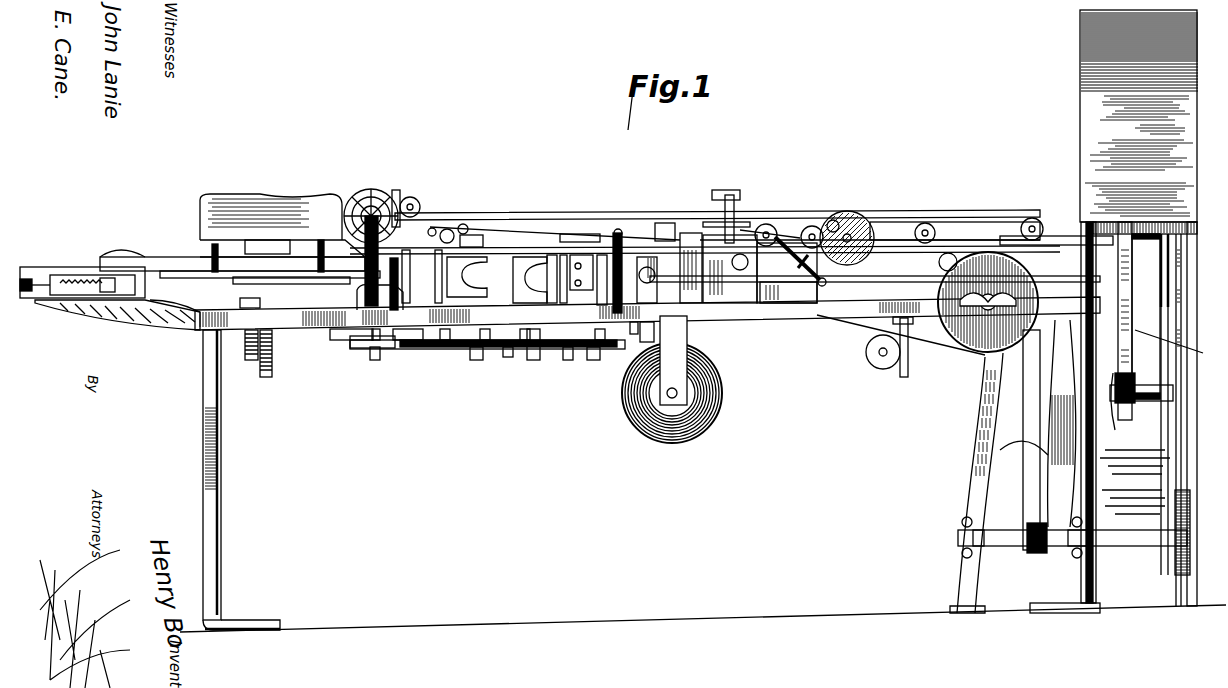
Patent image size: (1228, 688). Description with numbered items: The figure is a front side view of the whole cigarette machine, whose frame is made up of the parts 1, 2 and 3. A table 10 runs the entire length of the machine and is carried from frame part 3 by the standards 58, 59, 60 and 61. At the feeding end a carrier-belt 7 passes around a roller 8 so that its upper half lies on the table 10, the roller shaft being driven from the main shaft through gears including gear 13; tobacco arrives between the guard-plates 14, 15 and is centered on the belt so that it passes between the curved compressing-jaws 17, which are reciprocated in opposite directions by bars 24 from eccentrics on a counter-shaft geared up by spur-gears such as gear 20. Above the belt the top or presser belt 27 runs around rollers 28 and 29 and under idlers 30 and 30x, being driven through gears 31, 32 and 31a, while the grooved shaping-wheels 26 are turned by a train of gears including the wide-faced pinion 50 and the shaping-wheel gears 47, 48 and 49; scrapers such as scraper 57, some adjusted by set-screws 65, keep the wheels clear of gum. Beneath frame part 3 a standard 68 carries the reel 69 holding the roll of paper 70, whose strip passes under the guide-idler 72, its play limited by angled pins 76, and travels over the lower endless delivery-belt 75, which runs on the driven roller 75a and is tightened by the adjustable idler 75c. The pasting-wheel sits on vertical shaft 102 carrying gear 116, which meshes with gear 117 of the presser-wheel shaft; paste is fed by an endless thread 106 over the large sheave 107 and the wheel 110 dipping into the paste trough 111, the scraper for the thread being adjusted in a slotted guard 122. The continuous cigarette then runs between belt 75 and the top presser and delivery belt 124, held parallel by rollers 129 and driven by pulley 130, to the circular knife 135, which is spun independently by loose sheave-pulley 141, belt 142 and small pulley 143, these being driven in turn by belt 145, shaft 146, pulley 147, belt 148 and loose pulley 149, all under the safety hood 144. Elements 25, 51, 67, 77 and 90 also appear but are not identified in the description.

The frame 1 is at (222, 506).
The frame 2 is at (985, 200).
The frame 3 is at (200, 324).
The carrier-belt 7 is at (165, 260).
The roller 8 is at (120, 265).
The table 10 is at (265, 268).
The gear 13 is at (1181, 346).
The guard-plate 14 is at (282, 225).
The guard-plate 15 is at (215, 246).
The compressing-jaws 17 is at (679, 261).
The spur-gear 20 is at (253, 360).
The bar 24 is at (380, 284).
The pivot 25 is at (433, 228).
The grooved shaping-wheels 26 is at (487, 240).
The top or presser belt 27 is at (465, 224).
The roller 28 is at (375, 205).
The roller 29 is at (606, 230).
The idler 30 is at (455, 237).
The idler 30x is at (417, 210).
The gear 31 is at (372, 200).
The gear 31a is at (352, 348).
The gear 32 is at (365, 216).
The gear 47 is at (600, 344).
The gear 48 is at (553, 342).
The gear 49 is at (487, 352).
The wide-faced pinion 50 is at (518, 349).
The hanger 51 is at (567, 349).
The scraper 57 is at (620, 227).
The standard 58 is at (1090, 286).
The standard 59 is at (553, 295).
The standard 60 is at (433, 312).
The standard 61 is at (180, 300).
The set-screw 65 is at (618, 229).
The bracket 67 is at (648, 312).
The standard 68 is at (686, 338).
The reel 69 is at (720, 398).
The roll of paper 70 is at (716, 424).
The guide-idler 72 is at (576, 295).
The lower endless delivery-belt 75 is at (862, 320).
The roller 75a is at (972, 342).
The adjustable idler 75c is at (879, 368).
The pins 76 is at (240, 279).
The slide bar 77 is at (650, 327).
The plate 90 is at (580, 229).
The vertical shaft 102 is at (712, 224).
The endless thread 106 is at (820, 213).
The large sheave 107 is at (855, 218).
The wheel 110 is at (800, 228).
The paste trough 111 is at (820, 283).
The gear 116 is at (712, 223).
The gear 117 is at (760, 225).
The slotted guard 122 is at (791, 270).
The top endless presser and delivery belt 124 is at (940, 222).
The rollers 129 is at (833, 221).
The pulley 130 is at (764, 223).
The circular knife 135 is at (1085, 450).
The loose sheave-pulley 141 is at (1168, 293).
The belt 142 is at (1178, 328).
The small pulley 143 is at (1168, 401).
The hood 144 is at (1139, 122).
The belt 145 is at (1030, 487).
The shaft 146 is at (1157, 546).
The pulley 147 is at (1182, 577).
The belt 148 is at (1180, 472).
The loose pulley 149 is at (1178, 234).